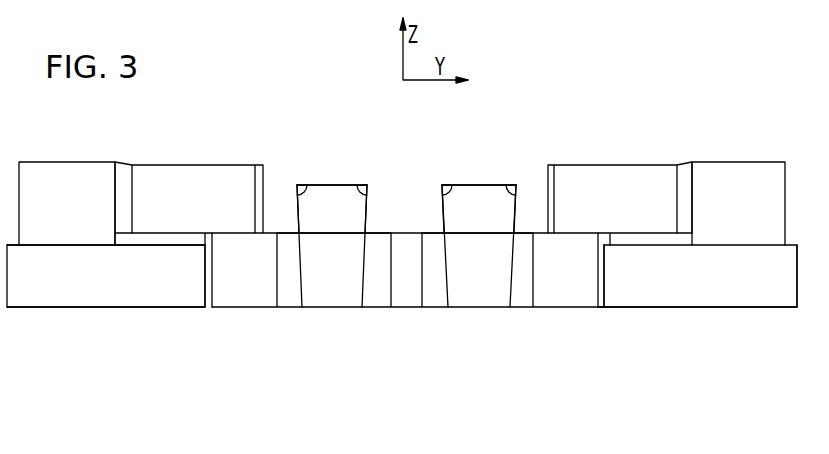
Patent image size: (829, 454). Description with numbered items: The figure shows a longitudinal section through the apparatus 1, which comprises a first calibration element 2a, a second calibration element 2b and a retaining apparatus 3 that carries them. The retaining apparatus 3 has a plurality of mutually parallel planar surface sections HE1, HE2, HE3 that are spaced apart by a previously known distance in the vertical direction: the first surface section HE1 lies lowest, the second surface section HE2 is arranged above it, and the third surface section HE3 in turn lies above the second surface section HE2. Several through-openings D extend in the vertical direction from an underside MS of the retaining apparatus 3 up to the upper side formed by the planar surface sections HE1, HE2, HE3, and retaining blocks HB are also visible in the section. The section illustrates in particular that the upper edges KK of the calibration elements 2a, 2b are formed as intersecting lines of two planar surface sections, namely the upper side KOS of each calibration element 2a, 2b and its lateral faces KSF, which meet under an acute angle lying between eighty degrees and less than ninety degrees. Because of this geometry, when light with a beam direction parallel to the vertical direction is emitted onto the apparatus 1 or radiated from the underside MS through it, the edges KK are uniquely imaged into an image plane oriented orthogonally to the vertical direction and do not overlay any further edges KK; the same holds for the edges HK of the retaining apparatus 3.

The apparatus 1 is at (42, 372).
The retaining apparatus 3 is at (783, 272).
The first calibration element 2a is at (326, 213).
The second calibration element 2b is at (474, 215).
The first surface section HE1 is at (158, 247).
The second surface section HE2 is at (124, 235).
The third surface section HE3 is at (82, 162).
The edges of the retaining apparatus HK is at (123, 164).
The retaining blocks HB is at (340, 290).
The through-openings D is at (253, 292).
The underside MS is at (652, 309).
The upper side KOS is at (340, 184).
The lateral faces KSF is at (299, 226).
The upper edges KK is at (296, 184).